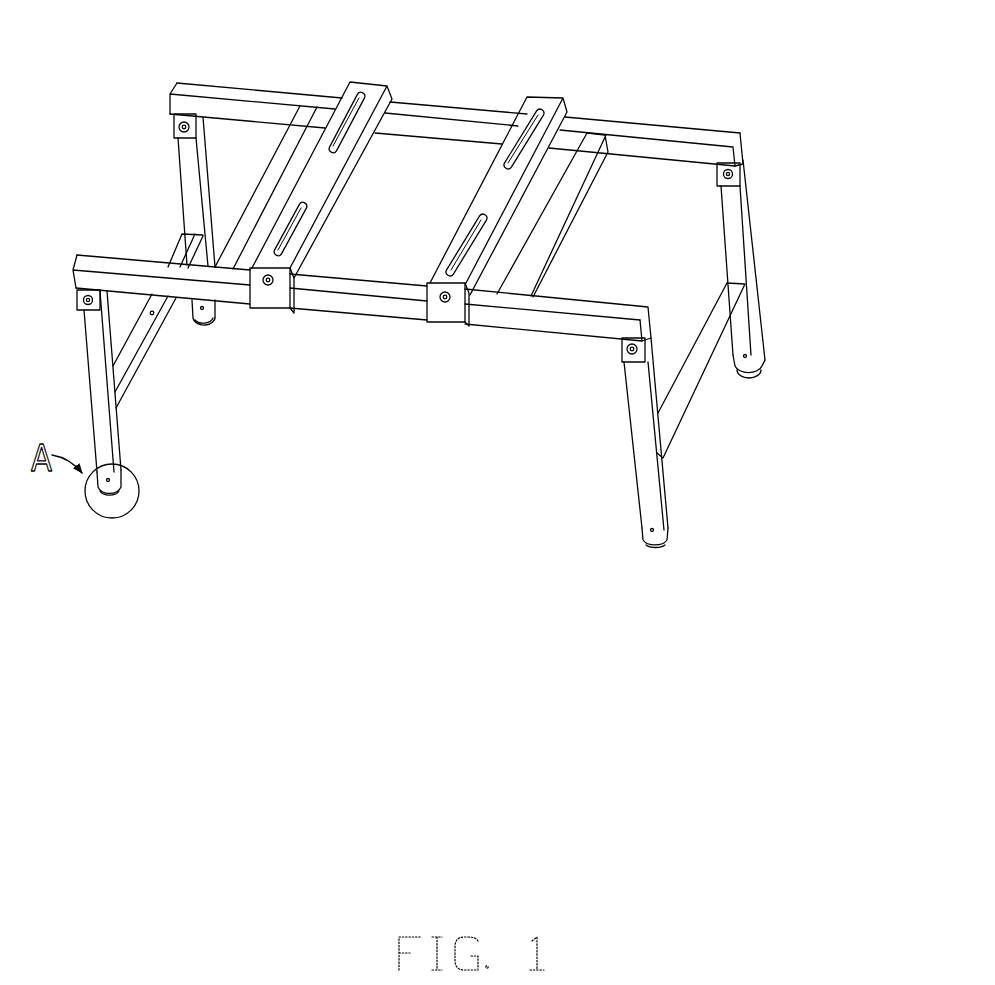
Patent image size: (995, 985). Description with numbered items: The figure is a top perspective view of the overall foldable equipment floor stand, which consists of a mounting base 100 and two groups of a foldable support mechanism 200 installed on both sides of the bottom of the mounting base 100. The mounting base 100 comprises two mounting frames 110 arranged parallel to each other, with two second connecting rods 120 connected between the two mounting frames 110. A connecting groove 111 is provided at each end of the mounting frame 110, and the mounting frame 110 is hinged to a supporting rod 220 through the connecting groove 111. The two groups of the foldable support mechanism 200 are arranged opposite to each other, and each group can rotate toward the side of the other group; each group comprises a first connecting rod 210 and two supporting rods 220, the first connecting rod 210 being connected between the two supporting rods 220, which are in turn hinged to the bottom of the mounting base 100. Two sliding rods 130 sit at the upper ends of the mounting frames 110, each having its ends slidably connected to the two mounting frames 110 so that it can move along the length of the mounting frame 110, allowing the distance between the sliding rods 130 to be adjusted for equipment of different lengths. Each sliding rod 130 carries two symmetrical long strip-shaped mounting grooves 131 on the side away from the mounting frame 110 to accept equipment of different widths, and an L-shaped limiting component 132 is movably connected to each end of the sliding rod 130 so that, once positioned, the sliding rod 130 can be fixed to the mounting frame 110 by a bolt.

The mounting base 100 is at (295, 352).
The mounting frame 110 is at (652, 135).
The connecting groove 111 is at (745, 163).
The second connecting rod 120 is at (290, 142).
The sliding rod 130 is at (562, 100).
The mounting groove 131 is at (518, 135).
The limiting component 132 is at (450, 312).
The foldable support mechanism 200 is at (471, 330).
The first connecting rod 210 is at (703, 378).
The supporting rod 220 is at (748, 253).